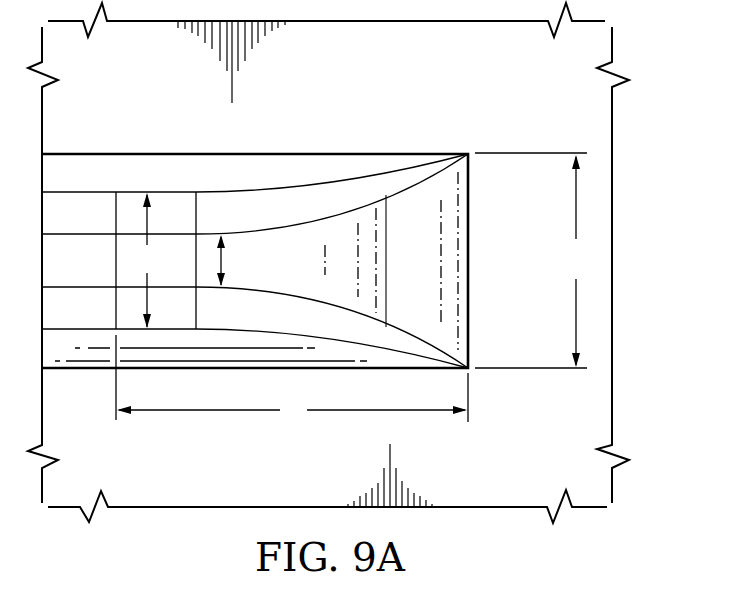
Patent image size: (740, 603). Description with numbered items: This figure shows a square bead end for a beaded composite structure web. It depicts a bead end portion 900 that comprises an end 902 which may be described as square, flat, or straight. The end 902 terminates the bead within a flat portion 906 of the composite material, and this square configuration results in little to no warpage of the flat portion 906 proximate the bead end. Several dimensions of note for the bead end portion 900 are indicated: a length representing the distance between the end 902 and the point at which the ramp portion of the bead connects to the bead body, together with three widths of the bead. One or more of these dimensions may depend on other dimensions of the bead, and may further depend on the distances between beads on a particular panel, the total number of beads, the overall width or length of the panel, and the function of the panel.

The bead end portion 900 is at (318, 252).
The end 902 is at (469, 262).
The flat portion 906 is at (588, 401).